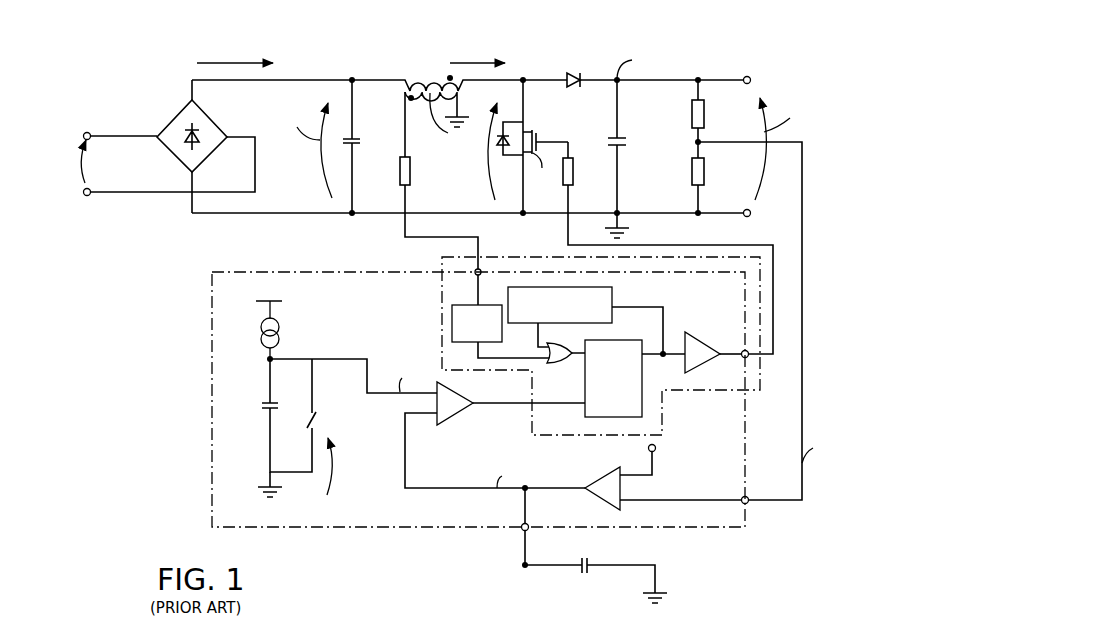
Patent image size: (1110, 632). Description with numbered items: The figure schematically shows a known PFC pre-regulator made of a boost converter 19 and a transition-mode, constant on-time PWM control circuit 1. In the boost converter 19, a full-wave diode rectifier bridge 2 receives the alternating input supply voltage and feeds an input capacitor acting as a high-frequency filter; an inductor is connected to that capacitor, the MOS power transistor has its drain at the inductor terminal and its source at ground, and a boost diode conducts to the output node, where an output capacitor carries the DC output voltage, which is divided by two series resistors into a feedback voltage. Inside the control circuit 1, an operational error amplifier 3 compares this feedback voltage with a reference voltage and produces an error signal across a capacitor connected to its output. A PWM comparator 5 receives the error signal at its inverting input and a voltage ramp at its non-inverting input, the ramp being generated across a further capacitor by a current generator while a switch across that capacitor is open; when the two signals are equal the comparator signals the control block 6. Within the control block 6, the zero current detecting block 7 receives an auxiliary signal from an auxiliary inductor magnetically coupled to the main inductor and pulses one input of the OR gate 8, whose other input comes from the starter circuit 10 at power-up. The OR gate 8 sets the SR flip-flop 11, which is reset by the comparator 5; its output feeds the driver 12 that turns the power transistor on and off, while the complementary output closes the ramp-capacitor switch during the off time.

The control circuit 1 is at (210, 408).
The full-wave diode rectifier bridge 2 is at (182, 123).
The operational error amplifier 3 is at (608, 473).
The PWM comparator 5 is at (458, 413).
The control block 6 is at (762, 373).
The zero current detecting (ZCD) block 7 is at (452, 325).
The OR gate 8 is at (552, 363).
The starter circuit 10 is at (614, 296).
The set-reset (SR) flip-flop 11 is at (644, 370).
The driver 12 is at (702, 342).
The boost converter 19 is at (350, 52).